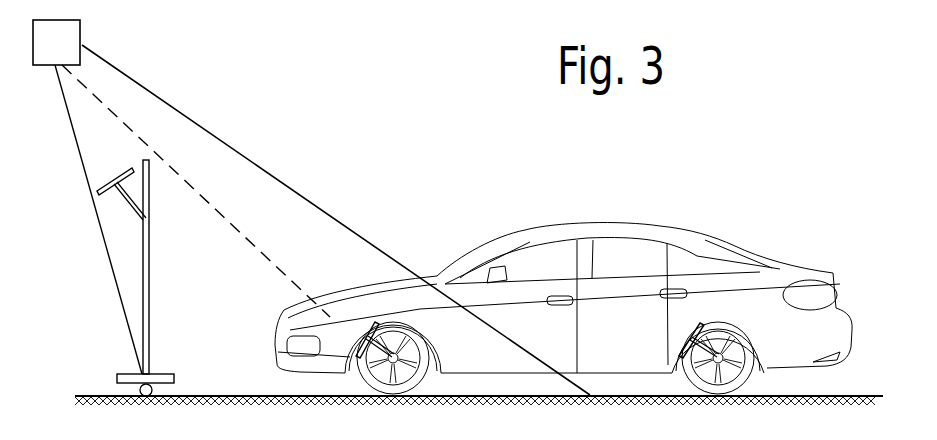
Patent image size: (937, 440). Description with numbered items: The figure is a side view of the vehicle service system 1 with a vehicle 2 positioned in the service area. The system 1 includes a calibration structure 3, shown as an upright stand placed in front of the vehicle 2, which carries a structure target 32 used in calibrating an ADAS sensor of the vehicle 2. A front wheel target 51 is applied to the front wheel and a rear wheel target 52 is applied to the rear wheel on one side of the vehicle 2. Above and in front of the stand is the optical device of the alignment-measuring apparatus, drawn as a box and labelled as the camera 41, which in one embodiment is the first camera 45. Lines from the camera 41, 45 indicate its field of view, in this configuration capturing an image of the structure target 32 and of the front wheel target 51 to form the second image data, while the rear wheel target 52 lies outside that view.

The vehicle service system 1 is at (377, 193).
The vehicle 2 is at (560, 238).
The calibration structure 3 is at (155, 288).
The structure target 32 is at (100, 191).
The camera 41 is at (127, 42).
The first camera 45 is at (65, 33).
The front wheel target 51 is at (357, 321).
The rear wheel target 52 is at (681, 326).